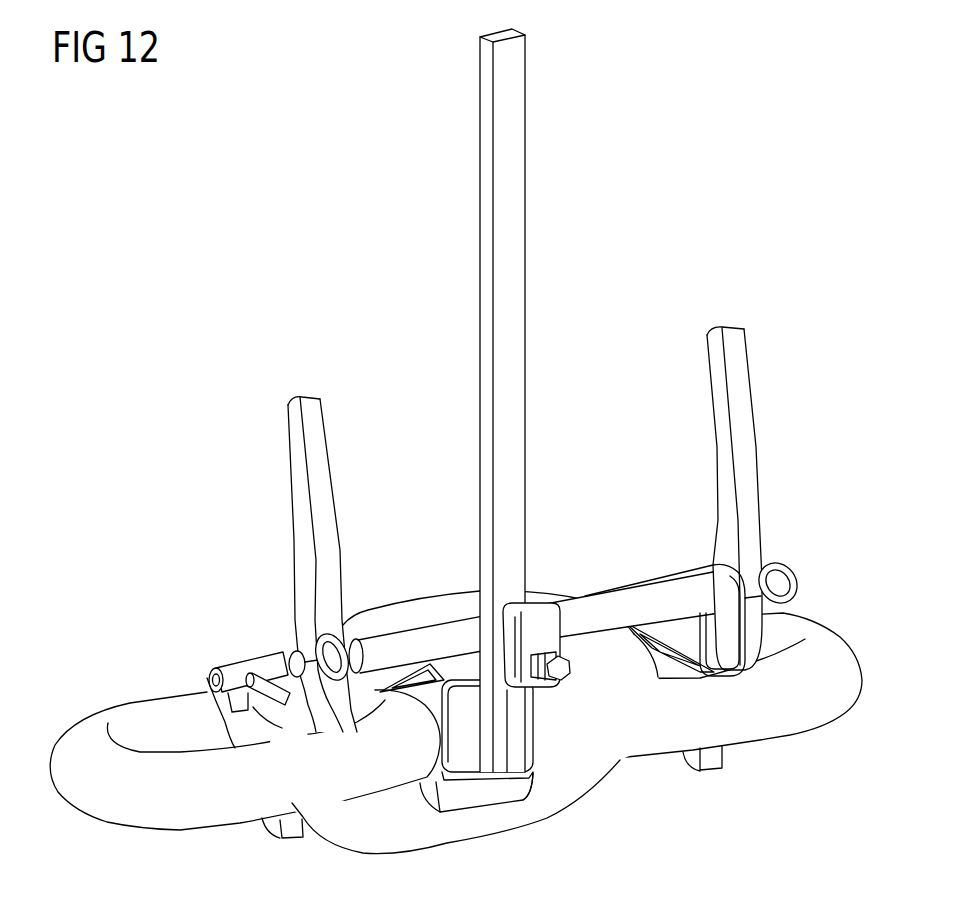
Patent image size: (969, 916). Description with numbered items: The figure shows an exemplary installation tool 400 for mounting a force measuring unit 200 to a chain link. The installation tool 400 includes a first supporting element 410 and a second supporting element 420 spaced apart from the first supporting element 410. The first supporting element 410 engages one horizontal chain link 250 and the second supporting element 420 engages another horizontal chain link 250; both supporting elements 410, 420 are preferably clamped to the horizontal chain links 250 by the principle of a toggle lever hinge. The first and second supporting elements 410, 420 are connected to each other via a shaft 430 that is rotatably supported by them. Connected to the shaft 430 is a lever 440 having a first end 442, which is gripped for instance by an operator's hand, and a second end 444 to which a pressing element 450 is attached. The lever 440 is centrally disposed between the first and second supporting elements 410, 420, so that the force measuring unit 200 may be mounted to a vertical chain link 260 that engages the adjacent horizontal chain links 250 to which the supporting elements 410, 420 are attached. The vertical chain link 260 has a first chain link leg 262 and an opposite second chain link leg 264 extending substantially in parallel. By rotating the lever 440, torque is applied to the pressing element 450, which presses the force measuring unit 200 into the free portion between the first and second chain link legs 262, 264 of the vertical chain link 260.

The force measuring unit 200 is at (408, 828).
The horizontal chain link 250 is at (824, 614).
The vertical chain link 260 is at (390, 594).
The first chain link leg 262 is at (434, 612).
The second chain link leg 264 is at (487, 827).
The installation tool 400 is at (506, 463).
The first supporting element 410 is at (295, 489).
The second supporting element 420 is at (722, 392).
The shaft 430 is at (577, 501).
The lever 440 is at (539, 446).
The first end 442 is at (517, 52).
The second end 444 is at (507, 768).
The pressing element 450 is at (460, 765).